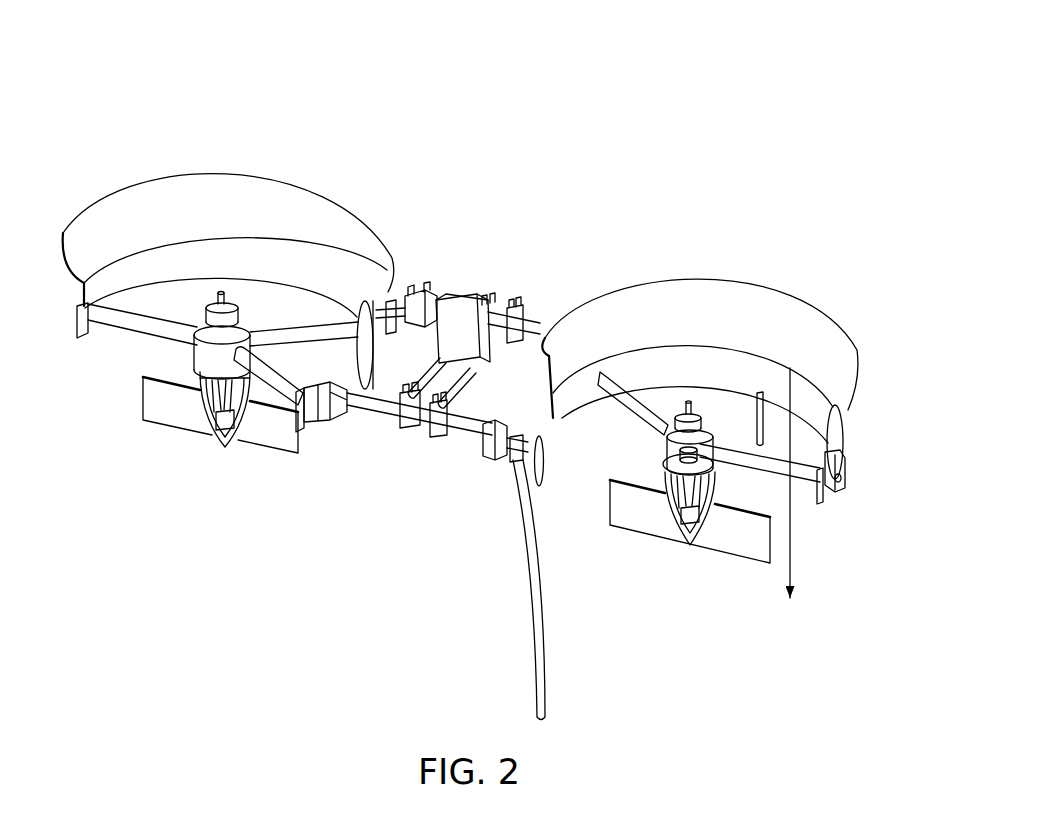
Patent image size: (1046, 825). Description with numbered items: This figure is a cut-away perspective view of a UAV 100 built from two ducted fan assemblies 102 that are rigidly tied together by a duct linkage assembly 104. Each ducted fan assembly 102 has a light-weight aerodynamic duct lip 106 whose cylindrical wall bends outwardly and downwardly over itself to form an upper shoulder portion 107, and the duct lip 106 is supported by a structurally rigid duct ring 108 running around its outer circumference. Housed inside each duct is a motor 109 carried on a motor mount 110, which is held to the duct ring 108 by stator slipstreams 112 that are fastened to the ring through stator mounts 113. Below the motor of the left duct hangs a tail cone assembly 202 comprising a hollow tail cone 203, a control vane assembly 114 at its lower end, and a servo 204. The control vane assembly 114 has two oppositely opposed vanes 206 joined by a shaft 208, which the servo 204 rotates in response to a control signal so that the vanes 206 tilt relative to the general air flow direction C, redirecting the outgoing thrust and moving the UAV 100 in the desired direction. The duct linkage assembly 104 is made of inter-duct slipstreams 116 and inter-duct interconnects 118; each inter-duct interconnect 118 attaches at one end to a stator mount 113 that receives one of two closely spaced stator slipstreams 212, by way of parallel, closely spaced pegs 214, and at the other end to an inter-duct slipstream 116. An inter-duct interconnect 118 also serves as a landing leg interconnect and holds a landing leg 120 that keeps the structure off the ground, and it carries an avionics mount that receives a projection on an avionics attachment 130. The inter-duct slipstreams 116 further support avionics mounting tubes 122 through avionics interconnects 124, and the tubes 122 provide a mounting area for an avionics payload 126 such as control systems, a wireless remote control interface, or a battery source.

The UAV 100 is at (438, 76).
The ducted fan assembly 102 is at (168, 160).
The duct linkage assembly 104 is at (502, 300).
The duct lip 106 is at (738, 280).
The upper shoulder portion 107 is at (845, 375).
The duct ring 108 is at (848, 462).
The motor 109 is at (232, 300).
The motor mount 110 is at (195, 318).
The stator slipstreams 112 is at (126, 342).
The stator mount 113 is at (838, 490).
The control vane assembly 114 is at (280, 452).
The inter-duct slipstreams 116 is at (373, 402).
The inter-duct interconnect 118 is at (324, 428).
The leg 120 is at (548, 667).
The avionics mounting tubes 122 is at (473, 389).
The avionics interconnects 124 is at (433, 426).
The avionics payload 126 is at (446, 347).
The avionics attachment 130 is at (418, 292).
The tail cone assembly 202 is at (224, 450).
The tail cone 203 is at (697, 542).
The servo 204 is at (675, 476).
The vanes 206 is at (152, 416).
The shaft 208 is at (208, 404).
The closely spaced stator slipstreams 212 is at (305, 331).
The pegs 214 is at (538, 473).
The general air flow direction C is at (791, 545).